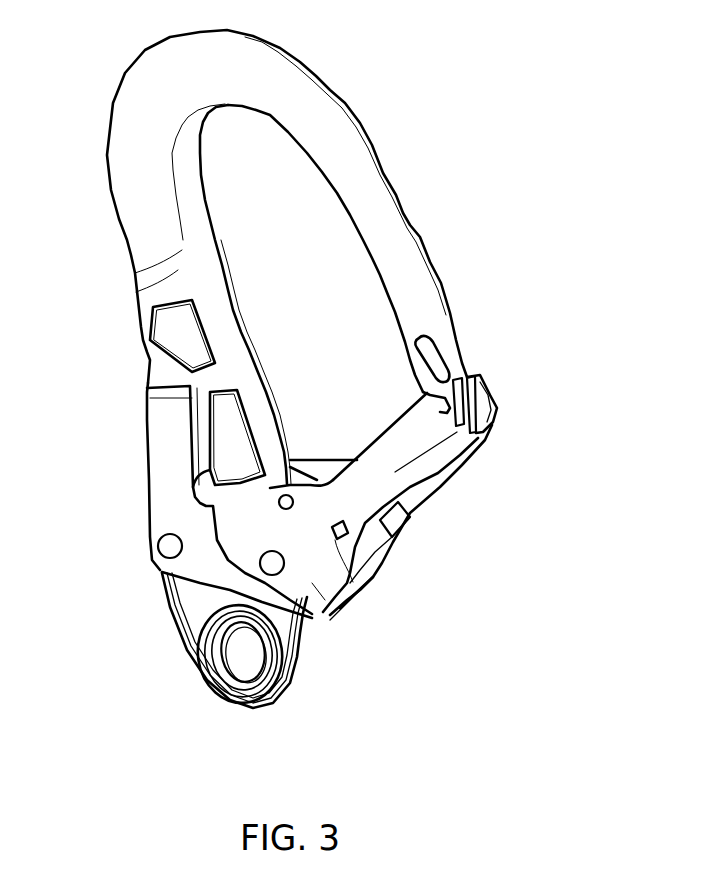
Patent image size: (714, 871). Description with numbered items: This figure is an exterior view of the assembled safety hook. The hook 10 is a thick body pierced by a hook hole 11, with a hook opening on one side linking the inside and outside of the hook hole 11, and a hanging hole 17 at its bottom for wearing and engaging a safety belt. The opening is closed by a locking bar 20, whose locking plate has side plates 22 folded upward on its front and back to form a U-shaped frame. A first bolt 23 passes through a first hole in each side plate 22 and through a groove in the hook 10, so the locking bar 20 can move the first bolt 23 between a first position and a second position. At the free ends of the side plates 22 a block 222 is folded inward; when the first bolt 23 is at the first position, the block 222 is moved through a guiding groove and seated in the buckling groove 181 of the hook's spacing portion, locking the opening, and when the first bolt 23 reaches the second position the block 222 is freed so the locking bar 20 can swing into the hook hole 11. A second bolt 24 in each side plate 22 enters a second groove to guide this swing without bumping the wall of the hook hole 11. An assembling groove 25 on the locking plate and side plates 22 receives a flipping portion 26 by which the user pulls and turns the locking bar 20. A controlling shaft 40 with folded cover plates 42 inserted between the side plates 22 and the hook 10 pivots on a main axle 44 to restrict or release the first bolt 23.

The hook 10 is at (305, 30).
The hook hole 11 is at (283, 188).
The hanging hole 17 is at (222, 658).
The locking bar 20 is at (455, 483).
The side plate 22 is at (322, 605).
The first bolt 23 is at (275, 575).
The second bolt 24 is at (284, 493).
The assembling groove 25 is at (377, 597).
The flipping portion 26 is at (392, 543).
The controlling shaft 40 is at (150, 455).
The cover plate 42 is at (165, 492).
The main axle 44 is at (165, 553).
The buckling groove 181 is at (466, 338).
The block 222 is at (447, 310).